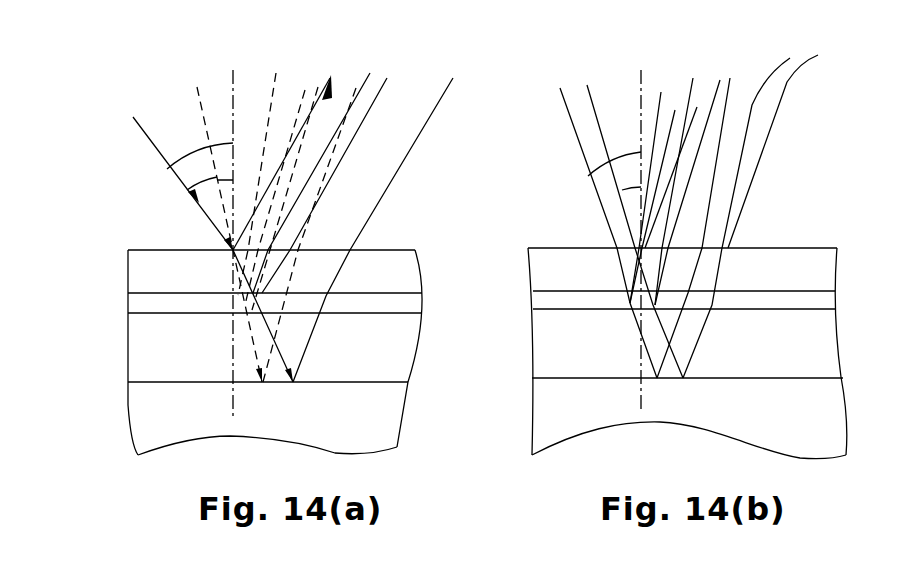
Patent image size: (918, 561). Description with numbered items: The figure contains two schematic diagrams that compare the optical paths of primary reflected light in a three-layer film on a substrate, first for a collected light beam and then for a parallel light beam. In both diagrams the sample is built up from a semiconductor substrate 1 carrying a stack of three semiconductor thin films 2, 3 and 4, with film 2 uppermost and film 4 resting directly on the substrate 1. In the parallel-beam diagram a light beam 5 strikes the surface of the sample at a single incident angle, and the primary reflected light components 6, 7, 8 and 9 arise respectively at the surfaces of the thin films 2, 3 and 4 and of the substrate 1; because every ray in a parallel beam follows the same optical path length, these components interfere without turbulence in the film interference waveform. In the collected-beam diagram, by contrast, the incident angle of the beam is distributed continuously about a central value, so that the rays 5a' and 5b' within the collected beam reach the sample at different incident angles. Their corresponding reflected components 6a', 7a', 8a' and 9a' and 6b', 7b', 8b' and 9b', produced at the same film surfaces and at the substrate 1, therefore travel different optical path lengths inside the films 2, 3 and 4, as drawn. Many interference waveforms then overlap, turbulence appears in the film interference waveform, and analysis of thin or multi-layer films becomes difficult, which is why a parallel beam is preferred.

In FIG. 14A, the semiconductor substrate 1 is at (384, 434).
In FIG. 14B, the semiconductor substrate 1 is at (545, 421).
In FIG. 14A, the semiconductor thin film 2 is at (398, 257).
In FIG. 14B, the semiconductor thin film 2 is at (770, 265).
In FIG. 14A, the semiconductor thin film 3 is at (425, 293).
In FIG. 14B, the semiconductor thin film 3 is at (548, 300).
In FIG. 14A, the semiconductor thin film 4 is at (400, 356).
In FIG. 14B, the semiconductor thin film 4 is at (548, 363).
In FIG. 14B, the light beam 5 is at (557, 85).
In FIG. 14B, the primary reflected light component 6 is at (661, 92).
In FIG. 14B, the primary reflected light component 7 is at (675, 110).
In FIG. 14B, the primary reflected light component 8 is at (698, 107).
In FIG. 14B, the primary reflected light component 9 is at (757, 204).
In FIG. 14A, the light beam 5a' is at (206, 207).
In FIG. 14A, the light beam 5b' is at (197, 221).
In FIG. 14A, the light beam 6a' is at (252, 164).
In FIG. 14A, the light beam 6b' is at (287, 162).
In FIG. 14A, the light beam 7a' is at (276, 169).
In FIG. 14A, the light beam 7b' is at (348, 163).
In FIG. 14A, the light beam 8a' is at (304, 171).
In FIG. 14A, the light beam 8b' is at (353, 183).
In FIG. 14A, the light beam 9a' is at (328, 207).
In FIG. 14A, the light beam 9b' is at (401, 227).